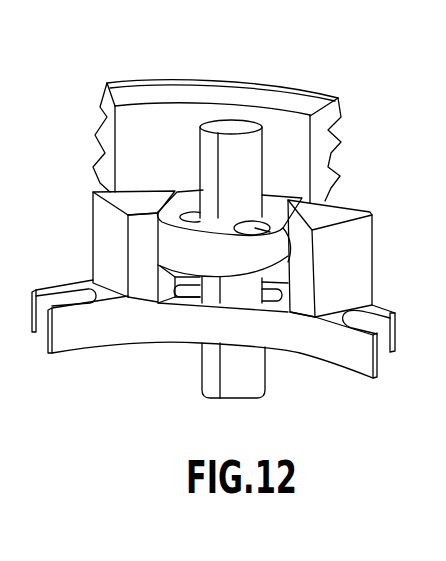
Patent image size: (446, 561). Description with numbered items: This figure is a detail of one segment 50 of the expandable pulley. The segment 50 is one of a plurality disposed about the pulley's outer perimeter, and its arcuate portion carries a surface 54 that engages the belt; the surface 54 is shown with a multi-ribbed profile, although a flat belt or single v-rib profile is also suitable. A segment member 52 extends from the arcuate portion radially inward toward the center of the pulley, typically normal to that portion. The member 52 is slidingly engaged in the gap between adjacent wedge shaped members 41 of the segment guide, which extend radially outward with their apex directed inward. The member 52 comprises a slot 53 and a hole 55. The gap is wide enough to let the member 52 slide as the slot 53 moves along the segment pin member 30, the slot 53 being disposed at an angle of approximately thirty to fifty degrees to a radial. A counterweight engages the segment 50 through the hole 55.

The segment pin member 30 is at (235, 127).
The segment 50 is at (274, 88).
The surface 54 is at (347, 141).
The slot 53 is at (192, 216).
The segment member 52 is at (178, 244).
The hole 55 is at (300, 250).
The wedge shaped member 41 is at (110, 267).